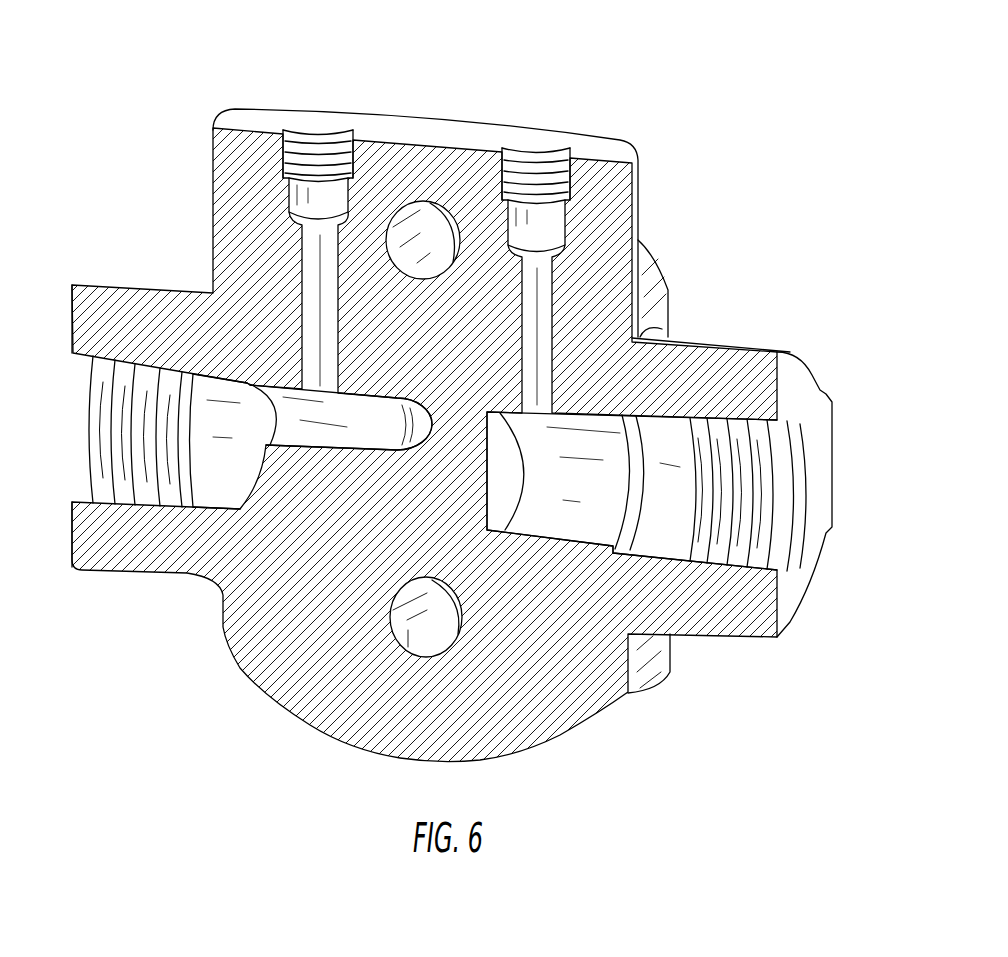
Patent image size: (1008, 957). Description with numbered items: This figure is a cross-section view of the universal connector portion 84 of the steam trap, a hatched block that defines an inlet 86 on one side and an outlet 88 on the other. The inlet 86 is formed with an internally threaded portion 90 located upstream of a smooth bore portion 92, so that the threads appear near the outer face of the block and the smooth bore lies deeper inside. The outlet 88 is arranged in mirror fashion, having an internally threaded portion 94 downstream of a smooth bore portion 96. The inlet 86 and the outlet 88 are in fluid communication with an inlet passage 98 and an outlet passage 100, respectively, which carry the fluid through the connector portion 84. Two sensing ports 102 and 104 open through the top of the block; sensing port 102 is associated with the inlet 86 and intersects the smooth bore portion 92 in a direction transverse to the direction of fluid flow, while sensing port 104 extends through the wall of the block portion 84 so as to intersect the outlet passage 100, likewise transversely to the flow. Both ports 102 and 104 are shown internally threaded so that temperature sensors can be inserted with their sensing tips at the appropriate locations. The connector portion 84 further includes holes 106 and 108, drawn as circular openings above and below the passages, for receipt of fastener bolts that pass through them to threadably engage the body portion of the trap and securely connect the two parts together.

The connector portion 84 is at (700, 202).
The inlet 86 is at (782, 484).
The outlet 88 is at (82, 426).
The internally threaded portion 90 is at (767, 552).
The smooth bore portion 92 is at (622, 445).
The internally threaded portion 94 is at (113, 485).
The smooth bore portion 96 is at (200, 397).
The inlet passage 98 is at (513, 440).
The outlet passage 100 is at (287, 400).
The sensing port 102 is at (538, 153).
The sensing port 104 is at (320, 128).
The hole 106 is at (407, 213).
The hole 108 is at (407, 630).